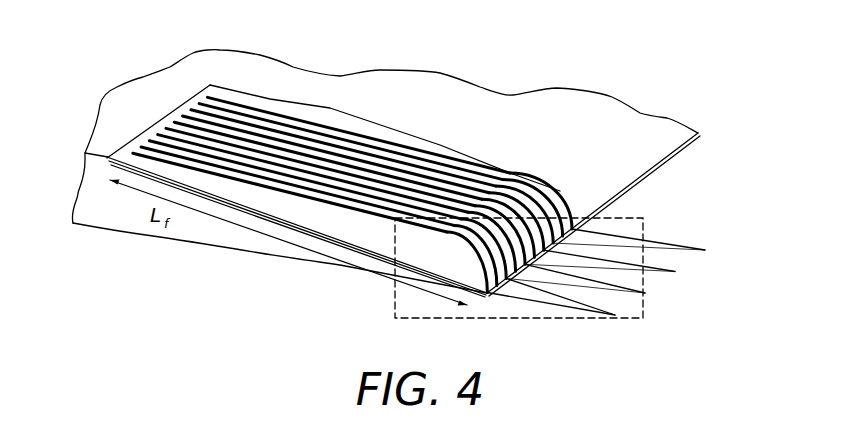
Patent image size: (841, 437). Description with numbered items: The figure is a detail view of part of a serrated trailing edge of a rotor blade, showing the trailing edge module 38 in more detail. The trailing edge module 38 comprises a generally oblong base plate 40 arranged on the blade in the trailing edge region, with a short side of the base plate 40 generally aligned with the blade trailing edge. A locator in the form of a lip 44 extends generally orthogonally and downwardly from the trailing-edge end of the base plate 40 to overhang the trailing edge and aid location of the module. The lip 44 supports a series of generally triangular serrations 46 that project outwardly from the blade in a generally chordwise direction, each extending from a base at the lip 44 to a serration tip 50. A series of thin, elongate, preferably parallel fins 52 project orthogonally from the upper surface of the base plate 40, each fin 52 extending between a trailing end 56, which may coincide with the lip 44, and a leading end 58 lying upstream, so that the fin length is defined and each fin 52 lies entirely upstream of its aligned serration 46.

The trailing edge module 38 is at (472, 126).
The base plate 40 is at (255, 100).
The lip 44 is at (487, 298).
The serrations 46 is at (580, 277).
The serration tip 50 is at (705, 250).
The fins 52 is at (512, 186).
The trailing end 56 is at (580, 208).
The leading end 58 is at (218, 84).